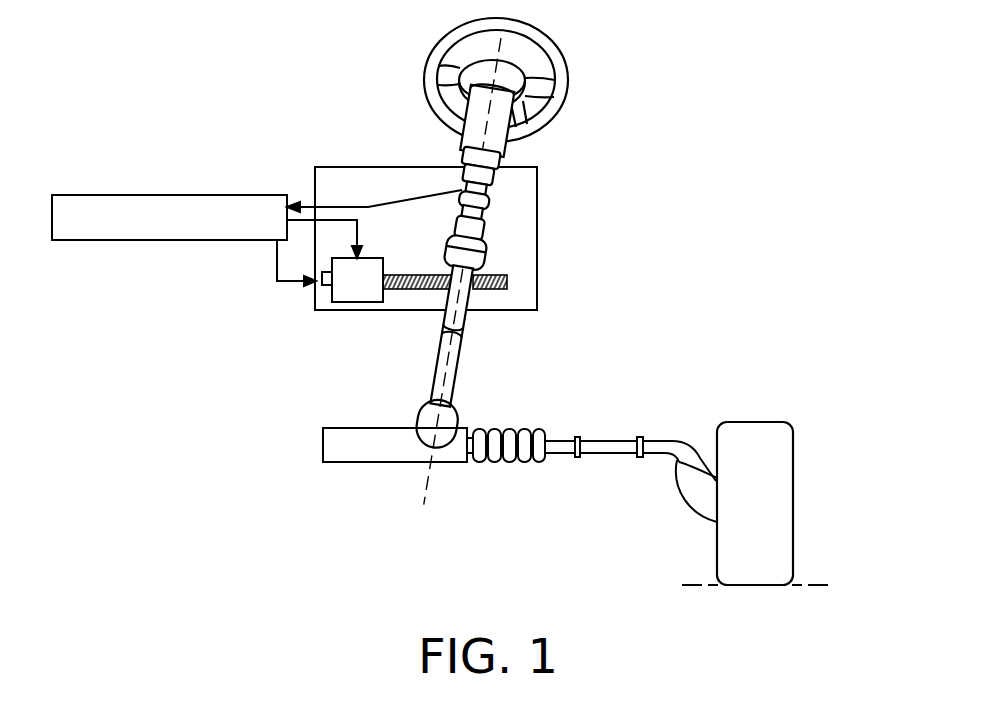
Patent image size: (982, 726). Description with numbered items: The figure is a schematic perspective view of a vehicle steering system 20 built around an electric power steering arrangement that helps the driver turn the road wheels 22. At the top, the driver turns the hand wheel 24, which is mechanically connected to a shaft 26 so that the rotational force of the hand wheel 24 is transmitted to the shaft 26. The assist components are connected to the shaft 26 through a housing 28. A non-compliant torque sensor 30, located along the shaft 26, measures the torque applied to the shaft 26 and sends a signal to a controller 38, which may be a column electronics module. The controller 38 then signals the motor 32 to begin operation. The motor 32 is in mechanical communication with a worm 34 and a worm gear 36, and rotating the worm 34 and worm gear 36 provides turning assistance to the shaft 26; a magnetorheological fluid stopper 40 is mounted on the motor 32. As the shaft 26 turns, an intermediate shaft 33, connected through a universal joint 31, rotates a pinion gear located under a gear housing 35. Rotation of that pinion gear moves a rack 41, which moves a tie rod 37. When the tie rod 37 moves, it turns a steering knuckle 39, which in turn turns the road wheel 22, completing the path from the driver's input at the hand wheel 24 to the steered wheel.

The steering system 20 is at (664, 250).
The road wheel 22 is at (793, 497).
The hand wheel 24 is at (567, 86).
The shaft 26 is at (478, 165).
The housing 28 is at (537, 282).
The non-compliant torque sensor 30 is at (481, 211).
The universal joint 31 is at (458, 336).
The motor 32 is at (375, 303).
The intermediate shaft 33 is at (458, 374).
The worm 34 is at (507, 283).
The gear housing 35 is at (457, 416).
The worm gear 36 is at (483, 252).
The tie rod 37 is at (625, 440).
The controller 38 is at (199, 195).
The steering knuckle 39 is at (683, 500).
The magnetorheological fluid stopper 40 is at (317, 291).
The rack 41 is at (507, 463).